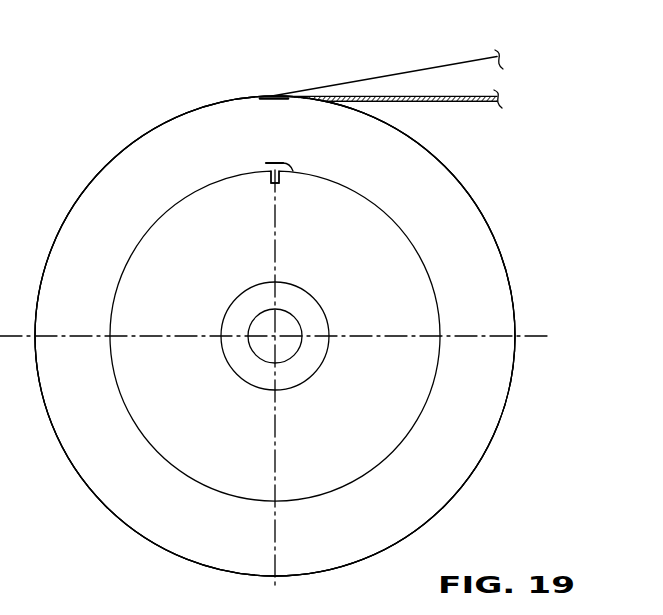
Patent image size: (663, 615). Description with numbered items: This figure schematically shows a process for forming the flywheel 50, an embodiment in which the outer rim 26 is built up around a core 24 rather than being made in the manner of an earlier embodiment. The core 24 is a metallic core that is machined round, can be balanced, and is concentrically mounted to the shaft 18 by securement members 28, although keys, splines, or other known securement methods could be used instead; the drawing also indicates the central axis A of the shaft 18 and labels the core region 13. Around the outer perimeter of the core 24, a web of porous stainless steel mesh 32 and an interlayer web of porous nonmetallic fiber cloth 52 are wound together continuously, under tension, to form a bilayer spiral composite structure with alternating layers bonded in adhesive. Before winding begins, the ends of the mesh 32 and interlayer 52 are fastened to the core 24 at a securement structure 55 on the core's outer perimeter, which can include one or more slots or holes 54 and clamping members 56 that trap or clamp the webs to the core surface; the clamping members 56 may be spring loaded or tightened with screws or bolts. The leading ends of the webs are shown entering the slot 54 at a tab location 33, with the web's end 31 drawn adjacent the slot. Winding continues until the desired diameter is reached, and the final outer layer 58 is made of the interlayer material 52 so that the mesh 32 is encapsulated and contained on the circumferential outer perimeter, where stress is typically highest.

The core 13 is at (227, 441).
The shaft 18 is at (287, 347).
The core 24 is at (360, 457).
The outer rim 26 is at (143, 518).
The securement members 28 is at (310, 309).
The adhesive strip 31 is at (485, 104).
The mesh 32 is at (440, 102).
The tab 33 is at (268, 94).
The flywheel 50 is at (536, 449).
The interlayer 52 is at (432, 67).
The slots or holes 54 is at (283, 174).
The securement structure 55 is at (262, 183).
The clamping members 56 is at (280, 161).
The final outer layer 58 is at (137, 135).
The axis A is at (275, 336).